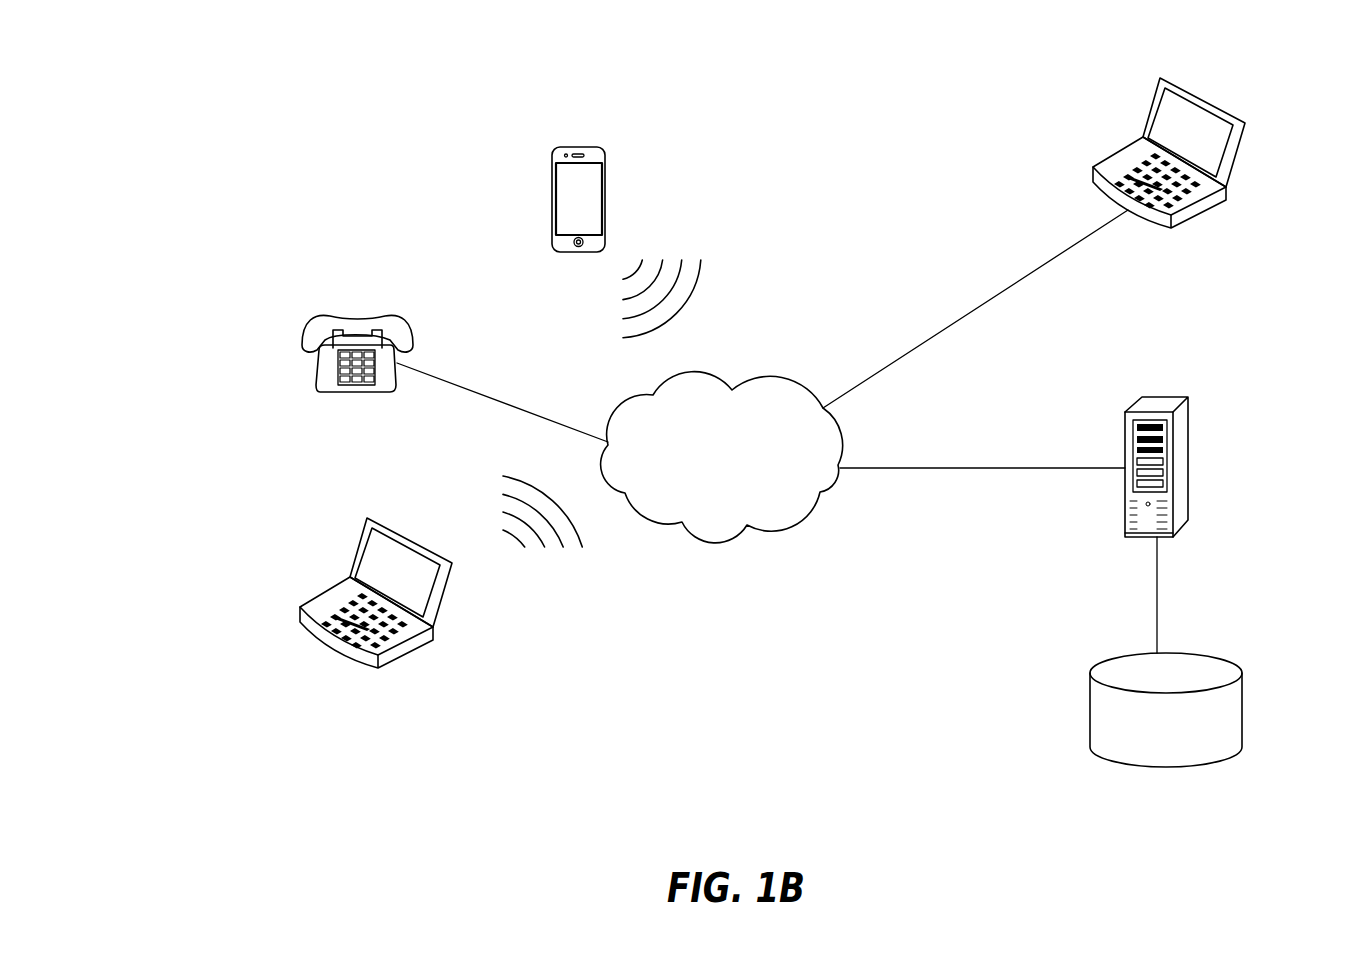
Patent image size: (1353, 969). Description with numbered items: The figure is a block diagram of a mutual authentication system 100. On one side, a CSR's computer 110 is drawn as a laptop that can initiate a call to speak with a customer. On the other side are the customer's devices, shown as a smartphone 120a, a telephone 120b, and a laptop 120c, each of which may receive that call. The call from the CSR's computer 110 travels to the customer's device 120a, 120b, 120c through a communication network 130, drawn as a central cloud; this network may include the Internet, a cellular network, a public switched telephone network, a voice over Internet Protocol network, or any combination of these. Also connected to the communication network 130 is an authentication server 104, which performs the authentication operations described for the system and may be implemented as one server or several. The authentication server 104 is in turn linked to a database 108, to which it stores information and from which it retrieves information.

The mutual authentication system 100 is at (201, 127).
The authentication server 104 is at (1168, 395).
The database 108 is at (1222, 655).
The CSR's computer 110 is at (1217, 103).
The customer's device 120a is at (592, 146).
The customer's device 120b is at (405, 318).
The customer's device 120c is at (444, 595).
The communication network 130 is at (783, 373).